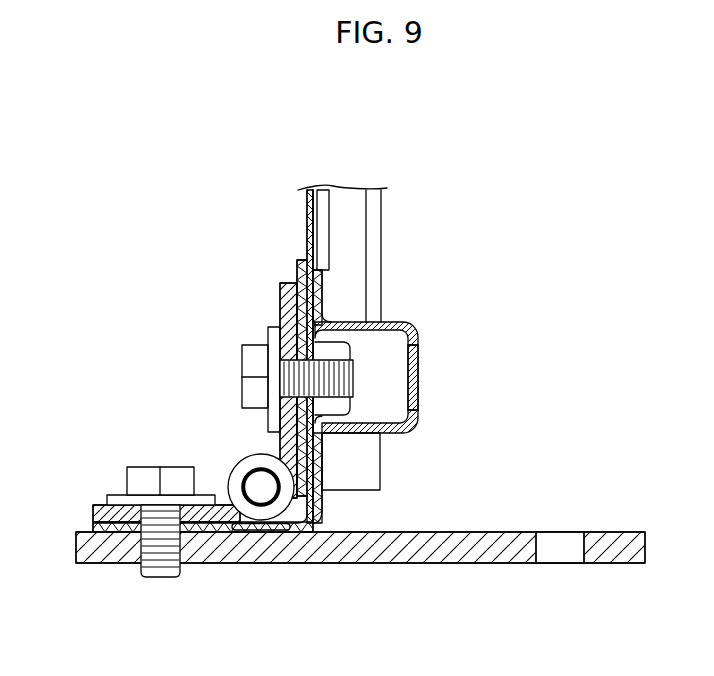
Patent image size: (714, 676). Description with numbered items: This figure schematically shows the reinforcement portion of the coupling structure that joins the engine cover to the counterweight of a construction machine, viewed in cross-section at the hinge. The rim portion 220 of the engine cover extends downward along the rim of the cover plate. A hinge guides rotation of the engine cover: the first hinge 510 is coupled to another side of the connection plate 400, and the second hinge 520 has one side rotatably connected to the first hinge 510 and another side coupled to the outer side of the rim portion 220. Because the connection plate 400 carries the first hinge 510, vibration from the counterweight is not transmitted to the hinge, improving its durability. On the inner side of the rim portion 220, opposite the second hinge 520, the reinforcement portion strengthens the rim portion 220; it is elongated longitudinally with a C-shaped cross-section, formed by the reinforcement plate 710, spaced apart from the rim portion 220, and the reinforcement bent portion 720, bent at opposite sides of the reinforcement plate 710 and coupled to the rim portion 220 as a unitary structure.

The rim portion 220 is at (307, 232).
The connection plate 400 is at (385, 563).
The first hinge 510 is at (93, 505).
The second hinge 520 is at (280, 303).
The reinforcement plate 710 is at (418, 375).
The reinforcement bent portion 720 is at (393, 321).